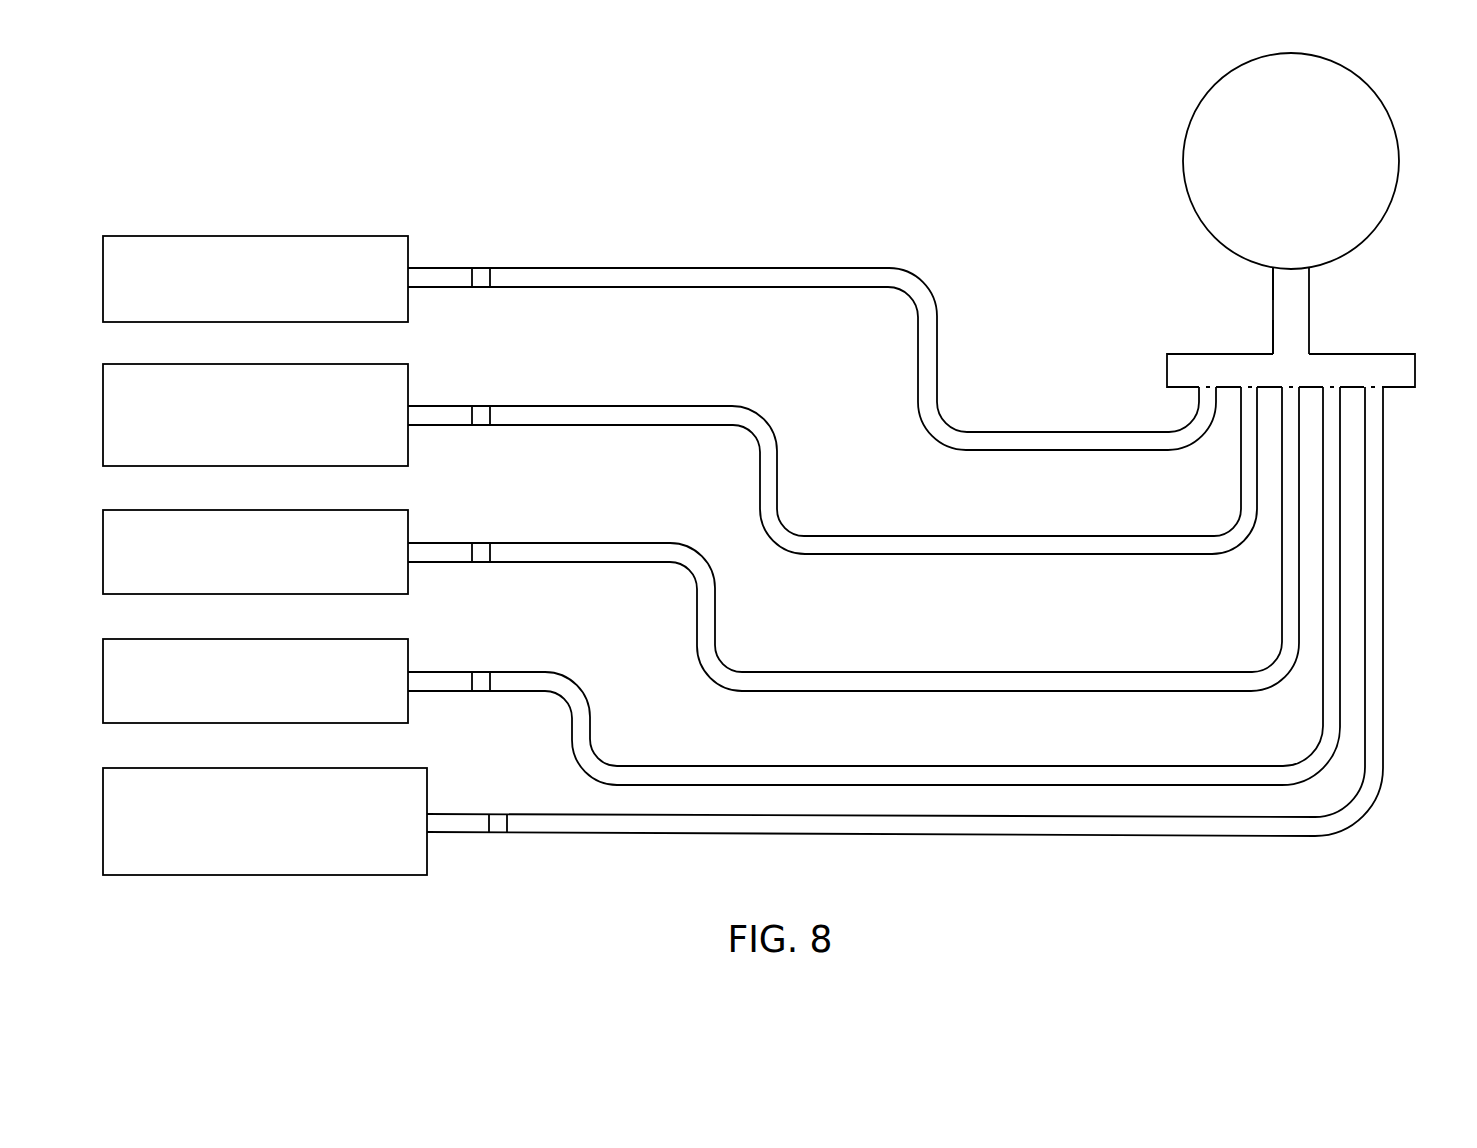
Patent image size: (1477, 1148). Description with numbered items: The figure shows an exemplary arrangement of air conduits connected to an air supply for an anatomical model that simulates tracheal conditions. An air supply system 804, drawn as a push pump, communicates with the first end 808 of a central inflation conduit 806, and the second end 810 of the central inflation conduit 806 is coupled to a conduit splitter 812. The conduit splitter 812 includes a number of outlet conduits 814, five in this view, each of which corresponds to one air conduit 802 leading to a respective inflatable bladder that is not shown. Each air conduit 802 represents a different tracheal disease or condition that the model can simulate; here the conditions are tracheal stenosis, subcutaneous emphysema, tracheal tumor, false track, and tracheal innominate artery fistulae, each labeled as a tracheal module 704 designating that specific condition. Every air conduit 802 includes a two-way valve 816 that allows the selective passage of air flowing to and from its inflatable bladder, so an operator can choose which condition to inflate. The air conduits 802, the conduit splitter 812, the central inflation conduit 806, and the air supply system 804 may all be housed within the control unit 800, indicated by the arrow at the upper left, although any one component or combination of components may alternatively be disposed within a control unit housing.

The control unit 800 is at (210, 193).
The tracheal module 704 is at (265, 555).
The air conduit 802 is at (895, 590).
The two-way valve 816 is at (480, 590).
The air supply system 804 is at (1273, 195).
The central inflation conduit 806 is at (1302, 290).
The first end of central inflation conduit 808 is at (1273, 282).
The second end of central inflation conduit 810 is at (1273, 337).
The conduit splitter 812 is at (1166, 374).
The outlet conduit 814 is at (1328, 639).